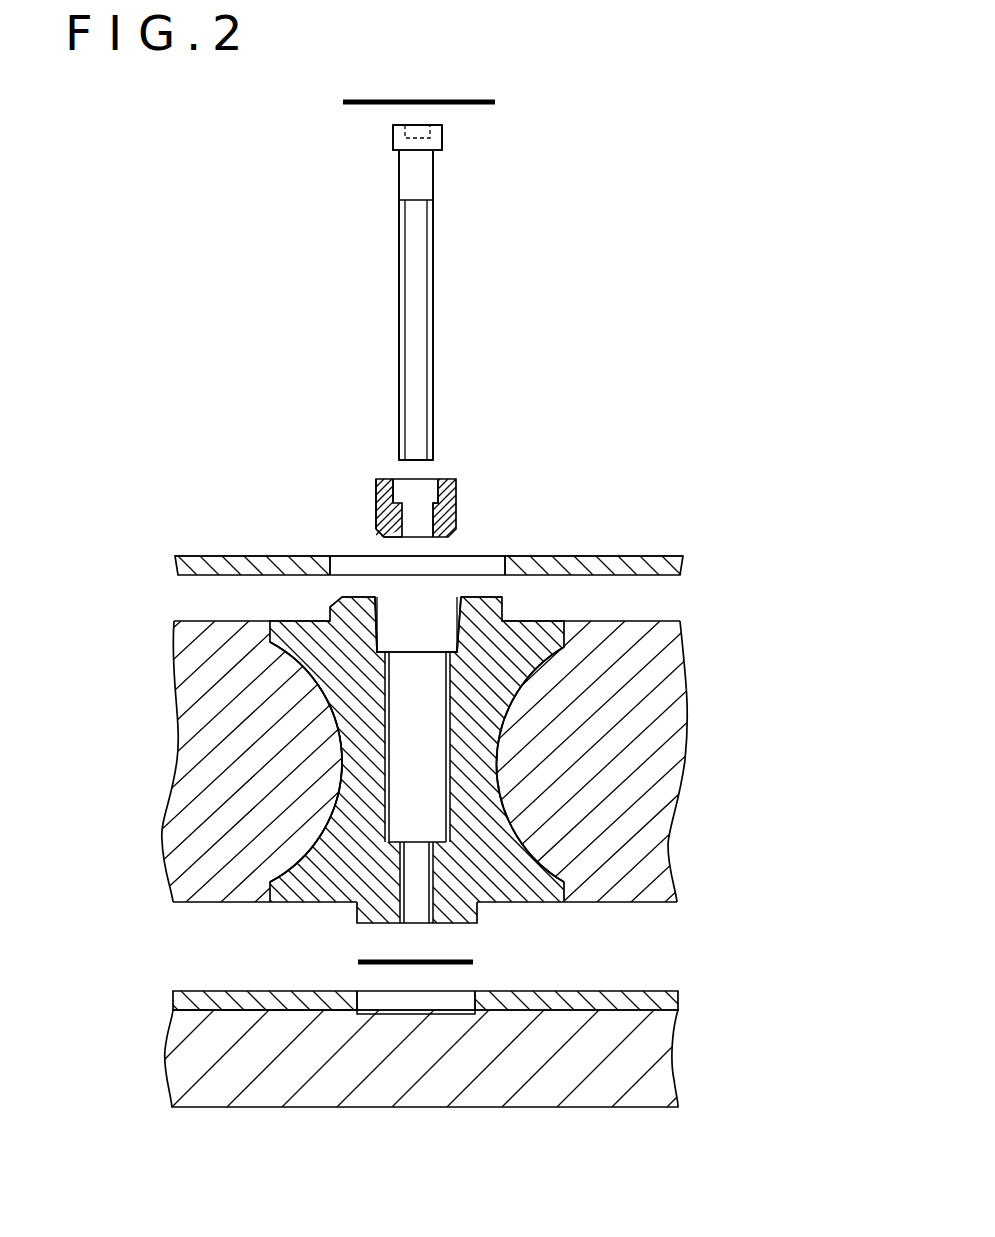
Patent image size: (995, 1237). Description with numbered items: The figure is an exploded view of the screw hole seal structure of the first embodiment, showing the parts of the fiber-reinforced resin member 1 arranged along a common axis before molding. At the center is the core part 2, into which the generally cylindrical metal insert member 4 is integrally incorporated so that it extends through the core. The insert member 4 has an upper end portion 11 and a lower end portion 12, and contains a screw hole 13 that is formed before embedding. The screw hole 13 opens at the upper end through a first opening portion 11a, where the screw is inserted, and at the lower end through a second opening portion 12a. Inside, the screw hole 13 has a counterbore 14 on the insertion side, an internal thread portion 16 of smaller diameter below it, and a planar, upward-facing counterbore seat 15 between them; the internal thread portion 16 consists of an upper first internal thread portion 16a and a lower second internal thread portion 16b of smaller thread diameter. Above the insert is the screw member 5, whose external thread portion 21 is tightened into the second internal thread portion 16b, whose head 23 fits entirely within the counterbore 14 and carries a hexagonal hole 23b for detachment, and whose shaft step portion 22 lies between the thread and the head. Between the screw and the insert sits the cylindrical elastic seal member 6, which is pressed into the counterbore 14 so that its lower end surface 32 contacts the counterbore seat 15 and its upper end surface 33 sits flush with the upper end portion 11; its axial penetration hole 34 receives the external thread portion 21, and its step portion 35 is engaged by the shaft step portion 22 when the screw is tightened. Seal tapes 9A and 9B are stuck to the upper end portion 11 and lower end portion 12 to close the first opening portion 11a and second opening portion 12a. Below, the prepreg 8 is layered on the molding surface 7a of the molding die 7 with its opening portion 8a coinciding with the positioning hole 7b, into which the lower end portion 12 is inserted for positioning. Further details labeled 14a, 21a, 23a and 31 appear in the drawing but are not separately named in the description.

The fiber-reinforced resin member 1 is at (692, 542).
The core part 2 is at (182, 760).
The insert member 4 is at (511, 729).
The screw member 5 is at (451, 240).
The elastic seal member 6 is at (474, 490).
The molding die 7 is at (662, 1060).
The molding surface 7a is at (222, 991).
The positioning hole 7b is at (380, 1013).
The prepreg 8 is at (585, 560).
The opening portion 8a is at (485, 558).
The seal tape 9A is at (482, 100).
The seal tape 9B is at (473, 961).
The upper end portion 11 is at (502, 612).
The first opening portion 11a is at (445, 595).
The lower end portion 12 is at (478, 918).
The second opening portion 12a is at (417, 927).
The screw hole 13 is at (441, 748).
The counterbore 14 is at (452, 632).
The opening of screw insertion hole 14a is at (390, 628).
The counterbore seat 15 is at (455, 642).
The internal thread portion 16 is at (740, 768).
The first internal thread portion 16a is at (450, 772).
The second internal thread portion 16b is at (437, 877).
The external thread portion 21 is at (436, 298).
The tip of threaded shaft 21a is at (399, 464).
The shaft step portion 22 is at (417, 152).
The head 23 is at (443, 138).
The head top surface 23a is at (400, 124).
The hexagonal hole 23b is at (423, 124).
The nut body 31 is at (380, 495).
The lower end surface 32 is at (383, 536).
The upper end surface 33 is at (392, 480).
The penetration hole 34 is at (428, 523).
The step portion 35 is at (435, 497).